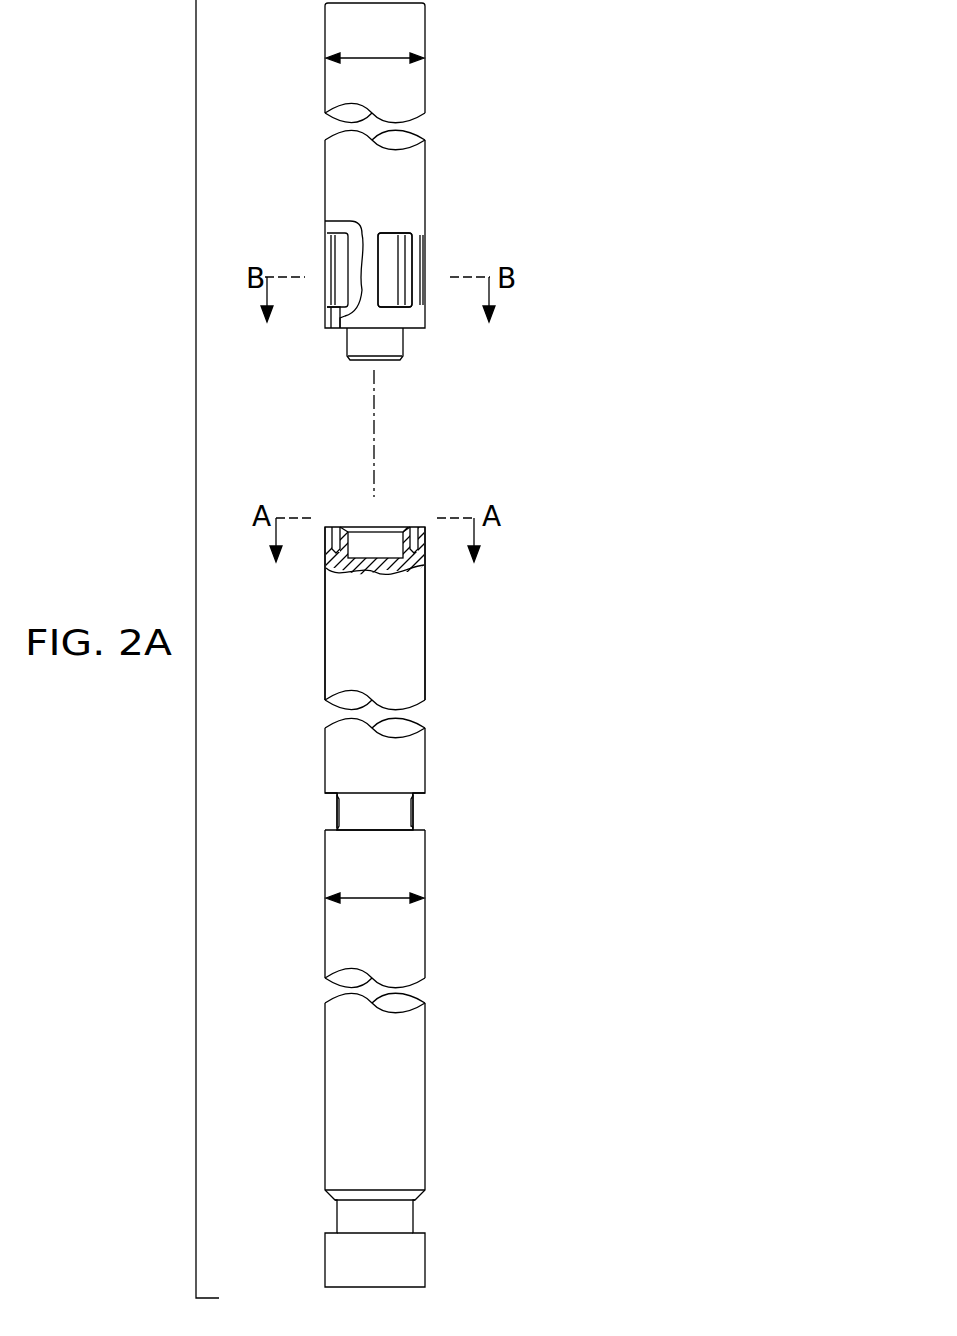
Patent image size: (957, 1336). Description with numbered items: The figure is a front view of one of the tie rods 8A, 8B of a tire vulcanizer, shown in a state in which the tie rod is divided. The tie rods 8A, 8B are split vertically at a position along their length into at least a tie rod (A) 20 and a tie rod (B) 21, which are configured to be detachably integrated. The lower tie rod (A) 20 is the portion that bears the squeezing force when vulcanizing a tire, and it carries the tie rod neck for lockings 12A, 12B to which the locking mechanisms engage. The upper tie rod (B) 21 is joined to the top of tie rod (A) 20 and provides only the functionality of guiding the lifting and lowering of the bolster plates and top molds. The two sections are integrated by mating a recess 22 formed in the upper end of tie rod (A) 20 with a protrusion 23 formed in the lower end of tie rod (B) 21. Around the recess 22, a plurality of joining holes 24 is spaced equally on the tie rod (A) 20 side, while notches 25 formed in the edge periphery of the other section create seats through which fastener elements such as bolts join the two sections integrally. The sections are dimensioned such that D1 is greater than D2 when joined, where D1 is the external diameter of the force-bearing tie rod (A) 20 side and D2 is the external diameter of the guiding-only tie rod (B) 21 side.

The tie rod (A) 20 is at (442, 874).
The tie rod (B) 21 is at (407, 165).
The recess 22 is at (388, 540).
The protrusion 23 is at (395, 347).
The joining hole 24 is at (336, 530).
The notch 25 is at (395, 249).
The tie rod 8A is at (421, 585).
The tie rod 8B is at (433, 613).
The tie rod neck for locking 12A is at (413, 808).
The tie rod neck for locking 12B is at (461, 812).
The external diameter of tie rod (A) D1 is at (375, 883).
The external diameter of tie rod (B) D2 is at (375, 44).